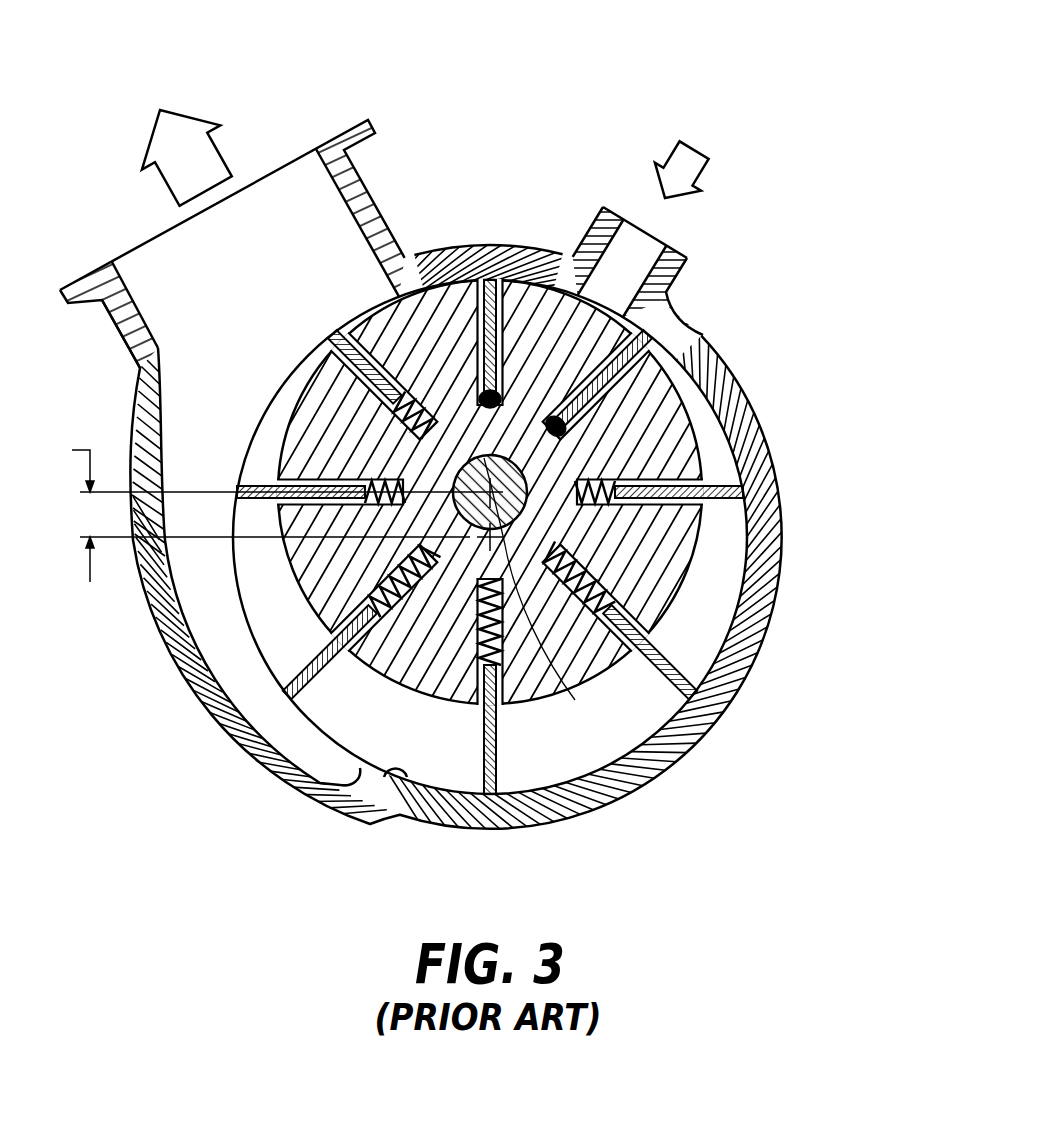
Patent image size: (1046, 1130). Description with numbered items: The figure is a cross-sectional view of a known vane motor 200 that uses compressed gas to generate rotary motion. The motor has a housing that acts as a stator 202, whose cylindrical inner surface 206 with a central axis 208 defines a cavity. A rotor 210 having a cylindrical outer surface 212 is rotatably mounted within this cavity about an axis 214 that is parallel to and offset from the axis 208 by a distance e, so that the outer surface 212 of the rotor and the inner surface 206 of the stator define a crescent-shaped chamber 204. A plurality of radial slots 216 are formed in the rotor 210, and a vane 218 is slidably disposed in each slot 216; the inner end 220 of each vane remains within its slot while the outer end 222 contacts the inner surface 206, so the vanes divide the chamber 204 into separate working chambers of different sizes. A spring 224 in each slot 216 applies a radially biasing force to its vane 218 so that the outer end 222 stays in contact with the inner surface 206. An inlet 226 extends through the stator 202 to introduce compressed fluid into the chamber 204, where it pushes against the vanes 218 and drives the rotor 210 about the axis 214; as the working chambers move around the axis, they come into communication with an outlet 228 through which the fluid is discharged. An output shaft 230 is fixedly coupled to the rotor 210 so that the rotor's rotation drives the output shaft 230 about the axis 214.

The vane motor 200 is at (523, 565).
The stator 202 is at (748, 430).
The crescent-shaped chamber 204 is at (622, 747).
The inner surface 206 is at (400, 782).
The central axis 208 is at (595, 725).
The rotor 210 is at (665, 540).
The outer surface 212 is at (682, 595).
The axis 214 is at (510, 467).
The radial slots 216 is at (477, 630).
The vane 218 is at (498, 745).
The inner end 220 is at (537, 690).
The outer end 222 is at (483, 782).
The spring 224 is at (477, 655).
The inlet 226 is at (676, 229).
The outlet 228 is at (300, 150).
The output shaft 230 is at (484, 458).